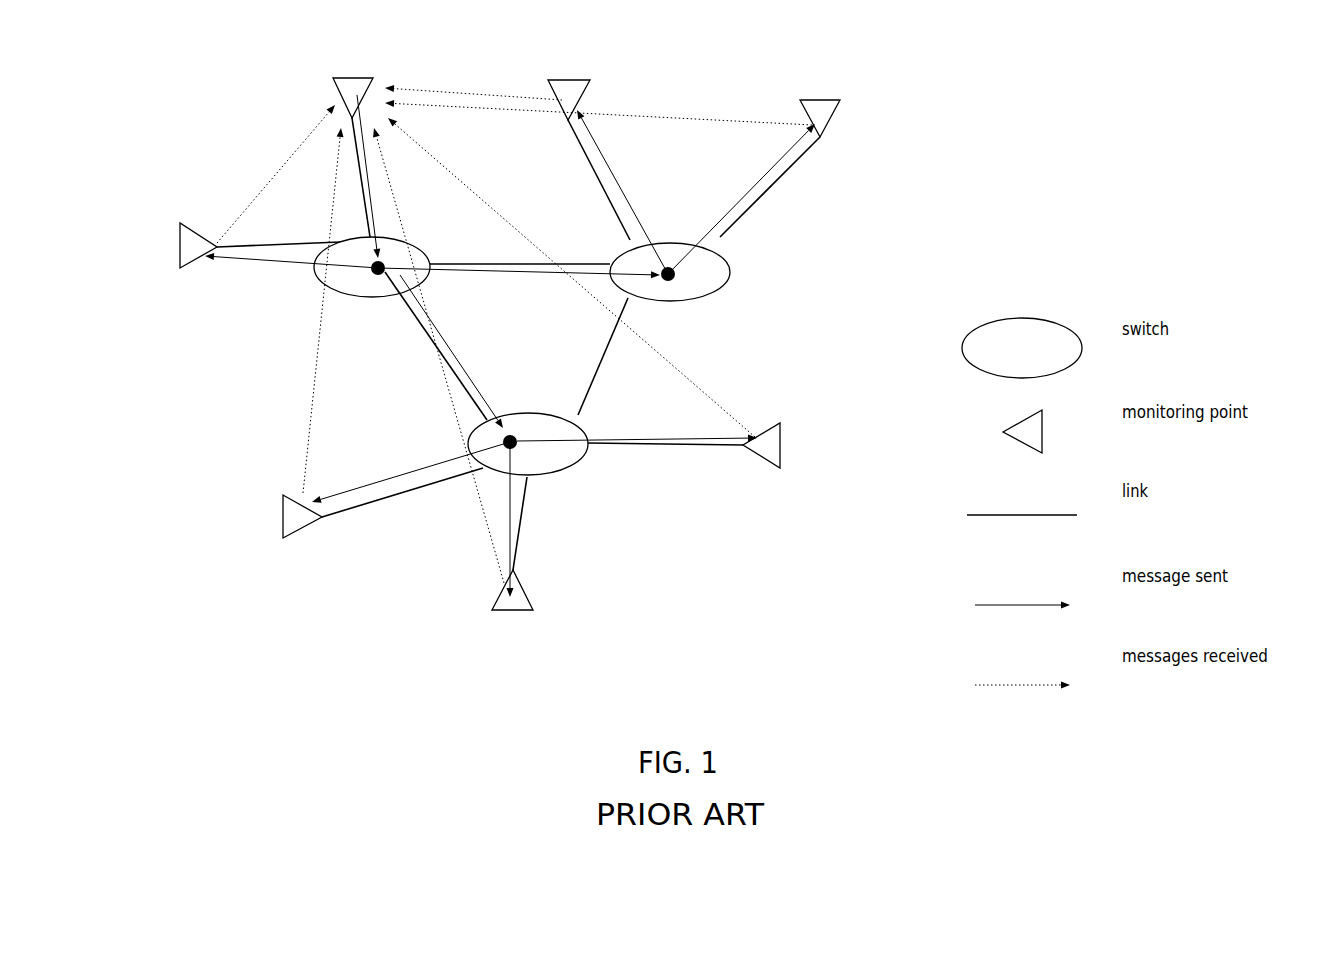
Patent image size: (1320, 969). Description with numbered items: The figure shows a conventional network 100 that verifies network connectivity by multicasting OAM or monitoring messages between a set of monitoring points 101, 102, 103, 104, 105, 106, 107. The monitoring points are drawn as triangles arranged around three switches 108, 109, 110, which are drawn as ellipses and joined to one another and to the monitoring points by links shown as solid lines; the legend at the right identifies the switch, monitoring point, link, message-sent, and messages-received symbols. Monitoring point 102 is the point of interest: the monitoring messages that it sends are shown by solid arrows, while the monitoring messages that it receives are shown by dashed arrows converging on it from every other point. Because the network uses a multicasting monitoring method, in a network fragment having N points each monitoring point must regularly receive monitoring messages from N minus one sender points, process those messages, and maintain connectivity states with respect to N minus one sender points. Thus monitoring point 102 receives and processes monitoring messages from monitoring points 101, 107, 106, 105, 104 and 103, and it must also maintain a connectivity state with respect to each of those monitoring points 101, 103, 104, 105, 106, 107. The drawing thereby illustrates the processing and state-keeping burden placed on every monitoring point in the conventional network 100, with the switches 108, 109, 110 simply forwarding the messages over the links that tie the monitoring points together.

The conventional network 100 is at (1001, 89).
The monitoring point 101 is at (200, 230).
The monitoring point 102 is at (350, 67).
The monitoring point 103 is at (563, 72).
The monitoring point 104 is at (823, 97).
The monitoring point 105 is at (780, 417).
The monitoring point 106 is at (535, 590).
The monitoring point 107 is at (310, 492).
The switch 108 is at (410, 237).
The switch 109 is at (667, 228).
The switch 110 is at (515, 408).